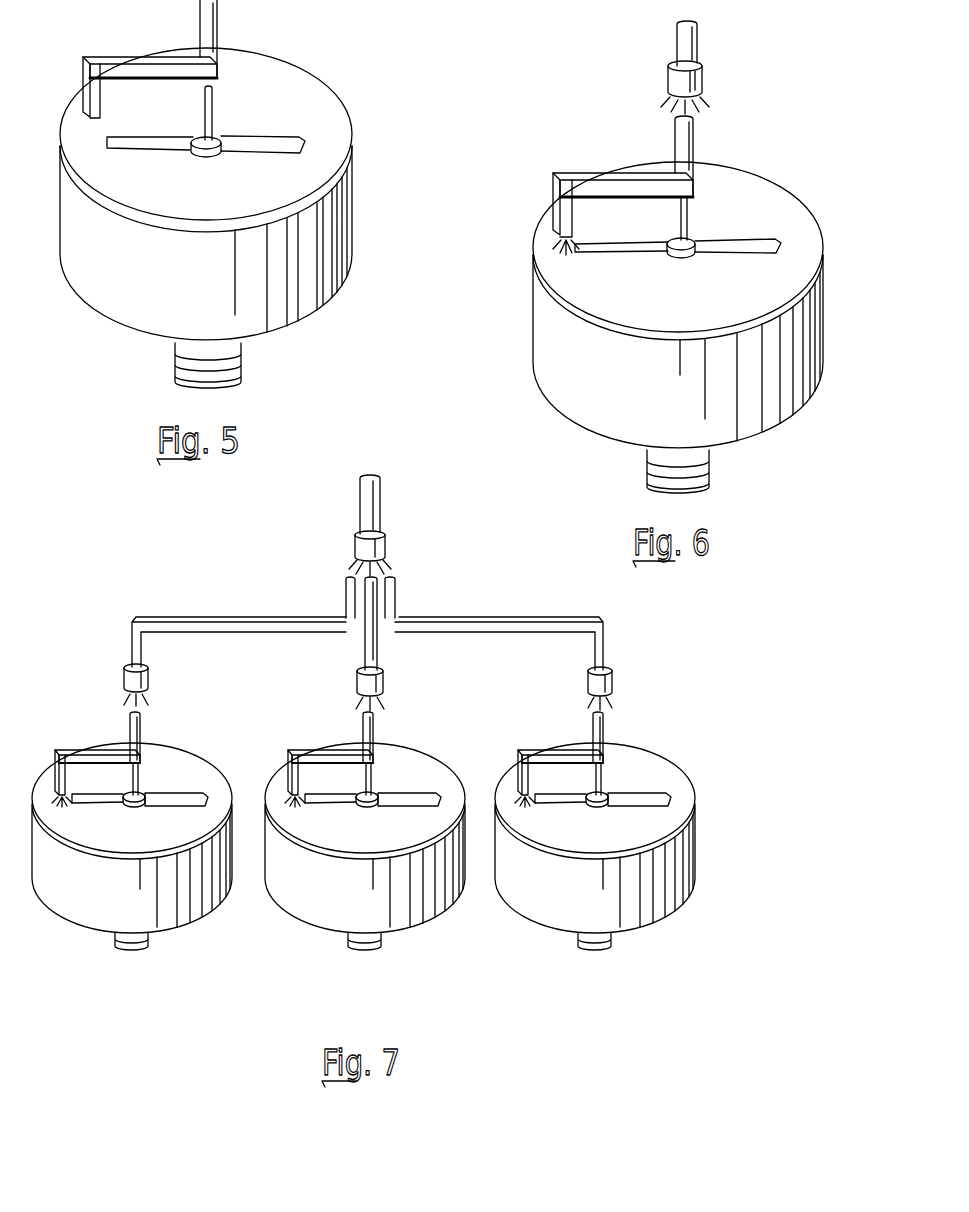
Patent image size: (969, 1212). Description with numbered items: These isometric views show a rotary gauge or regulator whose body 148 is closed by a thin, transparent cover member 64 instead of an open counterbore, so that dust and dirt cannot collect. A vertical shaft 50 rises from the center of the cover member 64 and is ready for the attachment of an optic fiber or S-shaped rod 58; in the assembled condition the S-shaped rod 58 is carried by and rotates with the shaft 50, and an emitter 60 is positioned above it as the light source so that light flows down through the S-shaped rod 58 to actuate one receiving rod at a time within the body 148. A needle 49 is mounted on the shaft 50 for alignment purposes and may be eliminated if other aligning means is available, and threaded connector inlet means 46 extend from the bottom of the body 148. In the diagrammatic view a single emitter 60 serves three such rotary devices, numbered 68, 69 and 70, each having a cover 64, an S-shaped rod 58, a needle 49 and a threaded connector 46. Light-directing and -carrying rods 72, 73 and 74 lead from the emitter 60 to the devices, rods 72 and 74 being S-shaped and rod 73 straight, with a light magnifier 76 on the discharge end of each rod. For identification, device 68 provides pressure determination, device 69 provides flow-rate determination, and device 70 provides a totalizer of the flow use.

In FIG. 5, the connector threads 46 is at (242, 366).
In FIG. 6, the connector threads 46 is at (648, 471).
In FIG. 7, the connector threads 46 is at (113, 946).
In FIG. 5, the needle 49 is at (258, 136).
In FIG. 6, the needle 49 is at (745, 238).
In FIG. 7, the needle 49 is at (172, 792).
In FIG. 5, the shaft 50 is at (200, 108).
In FIG. 6, the shaft 50 is at (690, 226).
In FIG. 5, the S-shaped rod 58 is at (140, 57).
In FIG. 6, the S-shaped rod 58 is at (628, 179).
In FIG. 7, the S-shaped rod 58 is at (96, 752).
In FIG. 6, the emitter 60 is at (676, 45).
In FIG. 7, the emitter 60 is at (360, 503).
In FIG. 5, the cover member 64 is at (313, 110).
In FIG. 6, the cover member 64 is at (810, 245).
In FIG. 5, the gauge body 148 is at (345, 240).
In FIG. 6, the gauge body 148 is at (540, 357).
In FIG. 7, the light-directing and -carrying rod 72 is at (485, 634).
In FIG. 7, the light-directing and -carrying rod 73 is at (365, 648).
In FIG. 7, the light-directing and -carrying rod 74 is at (258, 633).
In FIG. 7, the light magnifier 76 is at (612, 689).
In FIG. 7, the pressure determination device 68 is at (658, 930).
In FIG. 7, the flow-rate determination device 69 is at (428, 930).
In FIG. 7, the totalizer device 70 is at (200, 975).